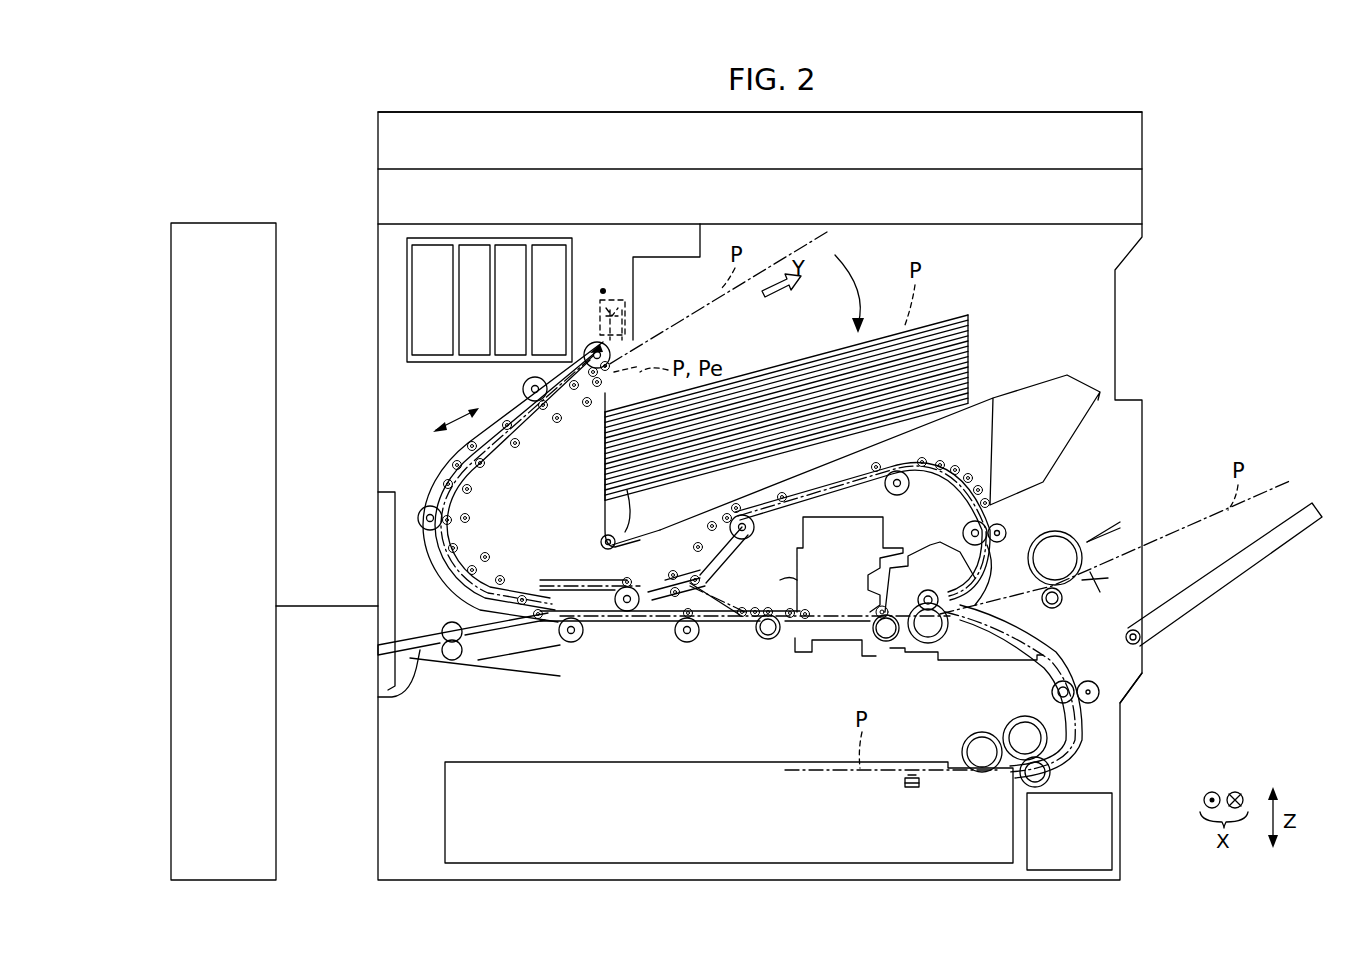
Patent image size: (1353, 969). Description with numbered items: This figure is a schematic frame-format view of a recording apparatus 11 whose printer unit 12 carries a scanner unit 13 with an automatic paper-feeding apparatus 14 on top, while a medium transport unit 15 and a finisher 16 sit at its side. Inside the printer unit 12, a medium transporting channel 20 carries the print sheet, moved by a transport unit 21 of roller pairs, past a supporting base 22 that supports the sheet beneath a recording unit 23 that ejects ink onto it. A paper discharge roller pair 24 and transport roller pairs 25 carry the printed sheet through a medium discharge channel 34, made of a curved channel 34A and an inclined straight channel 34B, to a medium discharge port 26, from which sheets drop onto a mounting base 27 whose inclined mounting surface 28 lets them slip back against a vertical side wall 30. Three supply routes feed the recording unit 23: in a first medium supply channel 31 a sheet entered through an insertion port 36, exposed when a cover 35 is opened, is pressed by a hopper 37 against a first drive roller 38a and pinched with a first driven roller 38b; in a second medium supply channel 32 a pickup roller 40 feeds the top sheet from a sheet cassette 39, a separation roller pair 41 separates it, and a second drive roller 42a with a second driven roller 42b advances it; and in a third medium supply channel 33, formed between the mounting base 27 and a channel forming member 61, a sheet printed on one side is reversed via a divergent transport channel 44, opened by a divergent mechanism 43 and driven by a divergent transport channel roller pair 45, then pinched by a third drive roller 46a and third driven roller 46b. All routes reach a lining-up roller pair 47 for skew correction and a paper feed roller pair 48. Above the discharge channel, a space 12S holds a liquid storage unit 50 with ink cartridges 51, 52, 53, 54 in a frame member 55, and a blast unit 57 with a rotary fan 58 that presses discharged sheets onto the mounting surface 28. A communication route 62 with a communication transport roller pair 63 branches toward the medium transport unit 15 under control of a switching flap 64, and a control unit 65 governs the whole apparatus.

The recording apparatus 11 is at (1140, 288).
The printer unit 12 is at (1143, 667).
The space 12S is at (603, 290).
The scanner unit 13 is at (1143, 196).
The automatic paper-feeding apparatus 14 is at (1143, 142).
The medium transport unit 15 is at (328, 604).
The finisher 16 is at (224, 222).
The medium transporting channel 20 is at (724, 648).
The transport unit 21 is at (684, 660).
The supporting base 22 is at (830, 640).
The recording unit 23 is at (797, 578).
The paper discharge roller pair 24 is at (767, 640).
The transport roller pairs 25 is at (595, 345).
The medium discharge port 26 is at (612, 350).
The mounting base 27 is at (665, 528).
The mounting surface 28 is at (992, 398).
The vertical side wall 30 is at (604, 515).
The first medium supply channel 31 is at (1018, 560).
The second medium supply channel 32 is at (1022, 640).
The third medium supply channel 33 is at (854, 470).
The medium discharge channel 34 is at (444, 578).
The curved channel 34A is at (440, 433).
The straight channel 34B is at (494, 404).
The cover 35 is at (1224, 588).
The insertion port 36 is at (1105, 546).
The hopper 37 is at (1112, 580).
The first drive roller 38a is at (1057, 531).
The first driven roller 38b is at (1062, 606).
The sheet cassette 39 is at (740, 770).
The pickup roller 40 is at (970, 737).
The separation roller pair 41 is at (1010, 722).
The second drive roller 42a is at (1052, 690).
The second driven roller 42b is at (1094, 684).
The divergent mechanism 43 is at (708, 592).
The divergent transport channel 44 is at (518, 582).
The divergent transport channel roller pair 45 is at (616, 590).
The third drive roller 46a is at (965, 536).
The third driven roller 46b is at (1000, 524).
The lining-up roller pair 47 is at (926, 644).
The paper feed roller pair 48 is at (886, 642).
The liquid storage unit 50 is at (509, 274).
The ink cartridge 51 is at (543, 250).
The ink cartridge 52 is at (508, 250).
The ink cartridge 53 is at (470, 250).
The ink cartridge 54 is at (430, 250).
The frame member 55 is at (572, 250).
The blast unit 57 is at (628, 296).
The rotary fan 58 is at (626, 312).
The channel forming member 61 is at (875, 520).
The communication route 62 is at (498, 665).
The communication transport roller pair 63 is at (458, 662).
The switching flap 64 is at (556, 660).
The control unit 65 is at (1112, 814).